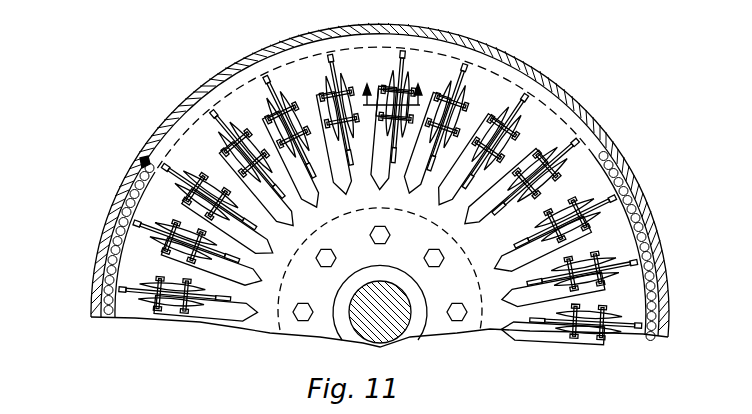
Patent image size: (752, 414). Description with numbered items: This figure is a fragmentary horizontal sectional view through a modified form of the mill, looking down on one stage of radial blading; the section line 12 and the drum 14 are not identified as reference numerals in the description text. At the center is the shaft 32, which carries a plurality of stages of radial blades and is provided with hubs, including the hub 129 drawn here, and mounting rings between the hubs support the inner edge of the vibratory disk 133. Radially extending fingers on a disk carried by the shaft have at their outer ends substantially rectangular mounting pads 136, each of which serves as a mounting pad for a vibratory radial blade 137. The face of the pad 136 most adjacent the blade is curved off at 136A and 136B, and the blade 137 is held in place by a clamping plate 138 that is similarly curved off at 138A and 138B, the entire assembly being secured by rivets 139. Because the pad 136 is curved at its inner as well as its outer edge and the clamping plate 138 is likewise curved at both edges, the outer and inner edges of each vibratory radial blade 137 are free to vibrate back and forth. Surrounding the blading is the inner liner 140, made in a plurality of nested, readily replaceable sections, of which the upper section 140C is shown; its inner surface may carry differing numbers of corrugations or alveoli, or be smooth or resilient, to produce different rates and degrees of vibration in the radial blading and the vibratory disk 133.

The section line 12- 12 is at (396, 82).
The drum shell 14 is at (163, 123).
The shaft 32 is at (383, 327).
The hub 129 is at (418, 323).
The vibratory disk 133 is at (235, 98).
The mounting pad 136 is at (165, 252).
The curved face portion of mounting pad 136A is at (157, 240).
The curved face portion of mounting pad 136B is at (236, 277).
The vibratory radial blade 137 is at (133, 229).
The clamping plate 138 is at (187, 177).
The curved edge of clamping plate 138A is at (135, 202).
The curved edge of clamping plate 138B is at (240, 243).
The rivets 139 is at (182, 227).
The inner liner 140 is at (147, 157).
The upper liner section 140C is at (140, 163).